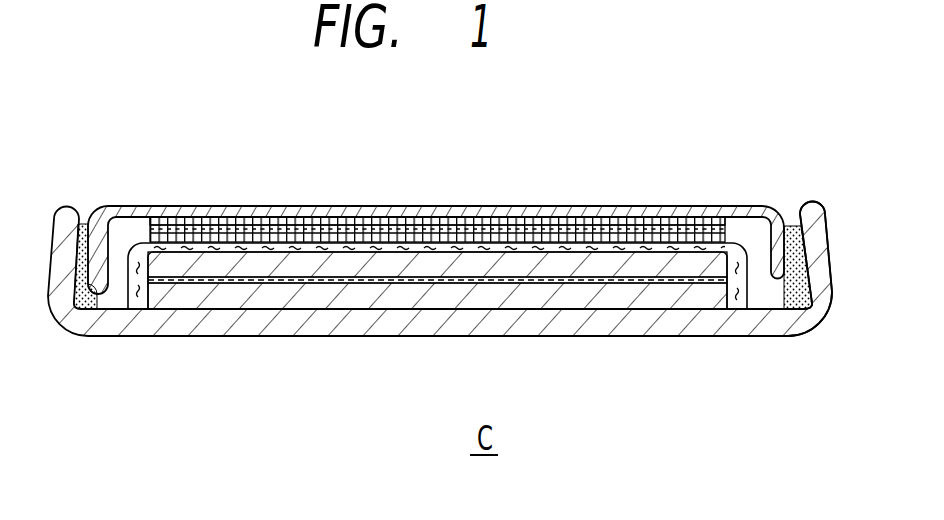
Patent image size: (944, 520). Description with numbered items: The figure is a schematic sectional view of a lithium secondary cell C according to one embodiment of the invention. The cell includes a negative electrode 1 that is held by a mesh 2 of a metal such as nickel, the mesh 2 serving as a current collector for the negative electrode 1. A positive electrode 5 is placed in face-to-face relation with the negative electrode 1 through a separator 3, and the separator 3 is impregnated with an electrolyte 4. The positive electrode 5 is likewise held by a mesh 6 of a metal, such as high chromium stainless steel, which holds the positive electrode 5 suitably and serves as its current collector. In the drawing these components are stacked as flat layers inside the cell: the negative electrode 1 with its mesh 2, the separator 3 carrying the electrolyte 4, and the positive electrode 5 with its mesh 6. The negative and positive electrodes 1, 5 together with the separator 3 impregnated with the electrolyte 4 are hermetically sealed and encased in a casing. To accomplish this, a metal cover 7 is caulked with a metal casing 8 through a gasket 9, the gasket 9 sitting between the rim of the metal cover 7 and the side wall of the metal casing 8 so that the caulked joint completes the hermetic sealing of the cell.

The negative electrode 1 is at (303, 293).
The mesh 2 is at (373, 283).
The separator 3 is at (129, 257).
The electrolyte 4 is at (746, 228).
The positive electrode 5 is at (287, 221).
The mesh 6 is at (413, 224).
The metal cover 7 is at (206, 206).
The metal casing 8 is at (542, 323).
The gasket 9 is at (832, 265).